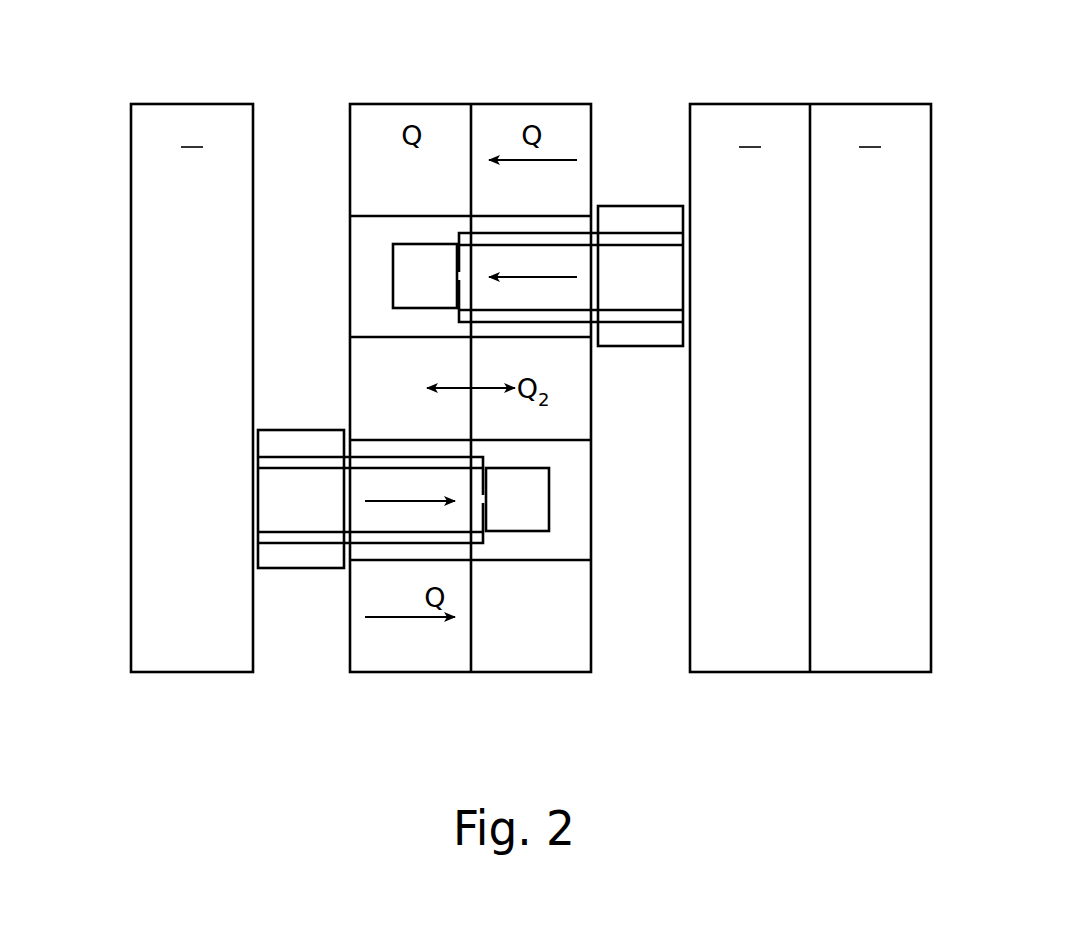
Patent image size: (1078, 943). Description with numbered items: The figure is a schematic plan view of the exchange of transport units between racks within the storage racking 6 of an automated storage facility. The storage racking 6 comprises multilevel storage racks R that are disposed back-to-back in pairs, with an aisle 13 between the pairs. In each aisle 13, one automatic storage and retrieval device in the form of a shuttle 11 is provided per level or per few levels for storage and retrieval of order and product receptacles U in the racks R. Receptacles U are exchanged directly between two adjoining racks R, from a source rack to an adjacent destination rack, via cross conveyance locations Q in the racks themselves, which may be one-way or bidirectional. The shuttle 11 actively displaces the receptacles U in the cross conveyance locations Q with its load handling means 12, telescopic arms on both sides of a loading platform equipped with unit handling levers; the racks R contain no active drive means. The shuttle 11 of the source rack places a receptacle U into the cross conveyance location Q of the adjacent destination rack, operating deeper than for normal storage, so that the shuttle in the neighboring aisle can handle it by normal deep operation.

The storage racking 6 is at (968, 388).
The shuttle 11 is at (638, 213).
The load handling means 12 is at (458, 546).
The aisle 13 is at (301, 138).